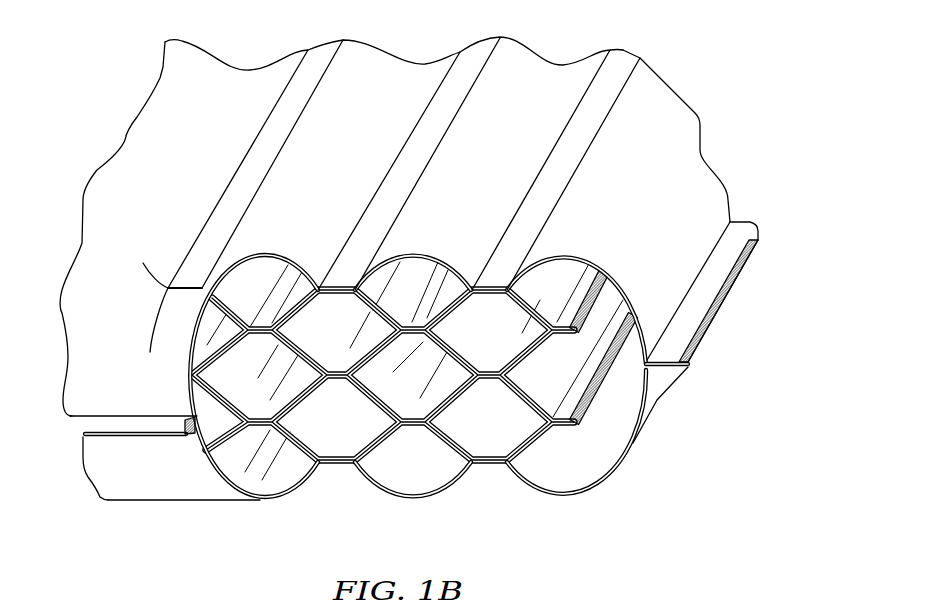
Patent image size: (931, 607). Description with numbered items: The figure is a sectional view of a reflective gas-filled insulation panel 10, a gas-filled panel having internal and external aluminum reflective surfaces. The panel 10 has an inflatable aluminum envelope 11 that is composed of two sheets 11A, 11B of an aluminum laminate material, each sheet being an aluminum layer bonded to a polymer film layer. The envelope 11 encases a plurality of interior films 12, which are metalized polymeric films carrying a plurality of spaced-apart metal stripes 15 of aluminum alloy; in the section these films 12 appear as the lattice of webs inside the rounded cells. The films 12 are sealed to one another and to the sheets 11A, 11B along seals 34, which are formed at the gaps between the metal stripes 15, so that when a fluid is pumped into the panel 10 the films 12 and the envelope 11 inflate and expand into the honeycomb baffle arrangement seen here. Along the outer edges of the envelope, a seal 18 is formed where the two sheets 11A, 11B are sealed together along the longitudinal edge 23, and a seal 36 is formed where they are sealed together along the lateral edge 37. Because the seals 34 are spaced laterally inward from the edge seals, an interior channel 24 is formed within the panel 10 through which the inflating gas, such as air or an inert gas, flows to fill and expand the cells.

The reflective gas-filled insulation panel 10 is at (123, 52).
The inflatable aluminum envelope 11 is at (693, 165).
The sheet of aluminum laminate material 11A is at (260, 500).
The sheet of aluminum laminate material 11B is at (500, 181).
The interior films 12 is at (431, 473).
The metal stripes 15 is at (380, 450).
The seal 18 is at (125, 416).
The longitudinal edge 23 is at (133, 440).
The interior channel 24 is at (585, 472).
The seals 34 is at (470, 58).
The seal 36 is at (677, 307).
The lateral edge 37 is at (743, 272).